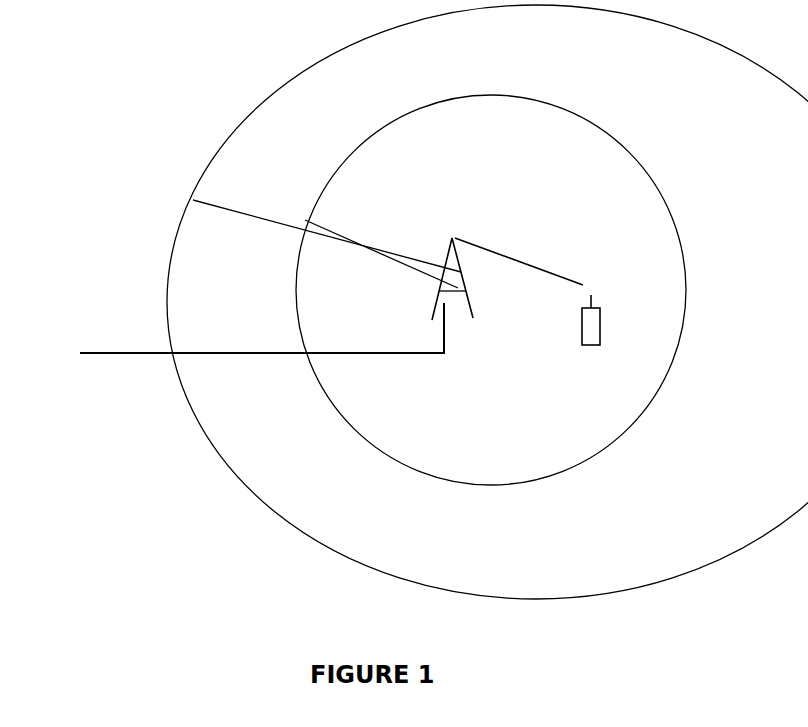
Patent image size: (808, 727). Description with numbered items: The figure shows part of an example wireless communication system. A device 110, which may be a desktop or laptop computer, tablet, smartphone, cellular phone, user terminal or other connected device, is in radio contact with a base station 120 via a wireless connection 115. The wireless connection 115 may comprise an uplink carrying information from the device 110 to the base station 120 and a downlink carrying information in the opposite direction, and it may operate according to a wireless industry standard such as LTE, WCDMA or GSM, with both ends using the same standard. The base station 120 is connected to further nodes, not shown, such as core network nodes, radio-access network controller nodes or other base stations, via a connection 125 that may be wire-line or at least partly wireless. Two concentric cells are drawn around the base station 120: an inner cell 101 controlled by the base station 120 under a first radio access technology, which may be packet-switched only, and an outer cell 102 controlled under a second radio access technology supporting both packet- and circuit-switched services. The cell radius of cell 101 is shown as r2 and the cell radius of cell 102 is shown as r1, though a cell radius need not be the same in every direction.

The cell 101 is at (491, 290).
The cell 102 is at (487, 302).
The device 110 is at (594, 332).
The wireless connection 115 is at (542, 275).
The base station 120 is at (456, 286).
The connection 125 is at (262, 329).
The cell radius r1 is at (327, 228).
The cell radius r2 is at (385, 248).